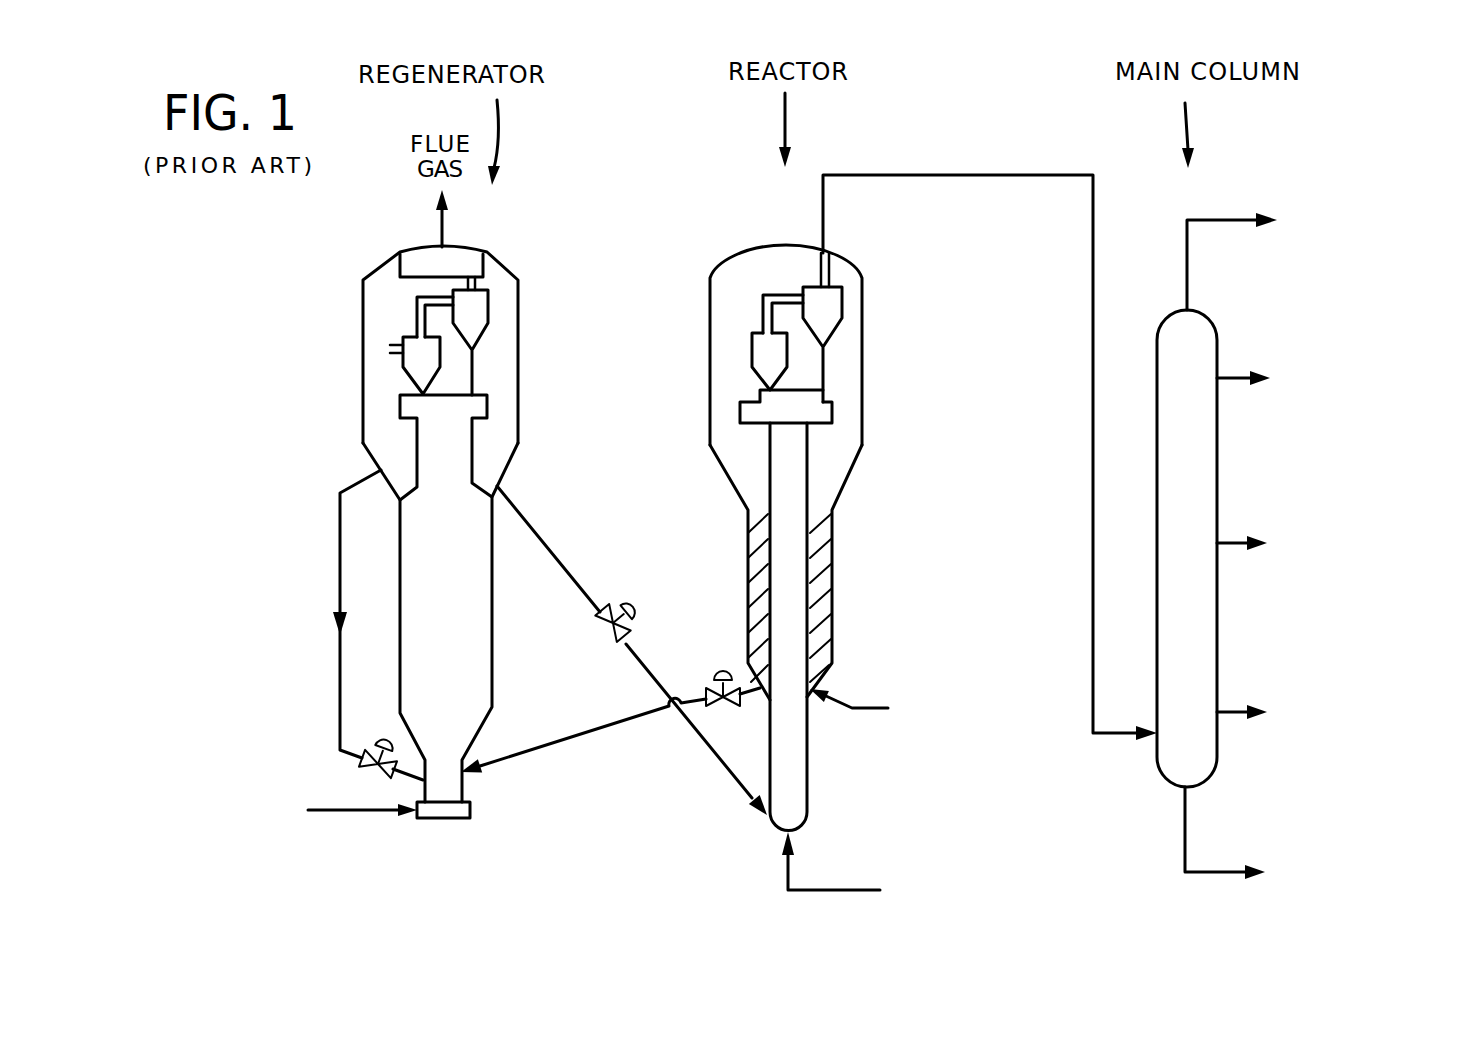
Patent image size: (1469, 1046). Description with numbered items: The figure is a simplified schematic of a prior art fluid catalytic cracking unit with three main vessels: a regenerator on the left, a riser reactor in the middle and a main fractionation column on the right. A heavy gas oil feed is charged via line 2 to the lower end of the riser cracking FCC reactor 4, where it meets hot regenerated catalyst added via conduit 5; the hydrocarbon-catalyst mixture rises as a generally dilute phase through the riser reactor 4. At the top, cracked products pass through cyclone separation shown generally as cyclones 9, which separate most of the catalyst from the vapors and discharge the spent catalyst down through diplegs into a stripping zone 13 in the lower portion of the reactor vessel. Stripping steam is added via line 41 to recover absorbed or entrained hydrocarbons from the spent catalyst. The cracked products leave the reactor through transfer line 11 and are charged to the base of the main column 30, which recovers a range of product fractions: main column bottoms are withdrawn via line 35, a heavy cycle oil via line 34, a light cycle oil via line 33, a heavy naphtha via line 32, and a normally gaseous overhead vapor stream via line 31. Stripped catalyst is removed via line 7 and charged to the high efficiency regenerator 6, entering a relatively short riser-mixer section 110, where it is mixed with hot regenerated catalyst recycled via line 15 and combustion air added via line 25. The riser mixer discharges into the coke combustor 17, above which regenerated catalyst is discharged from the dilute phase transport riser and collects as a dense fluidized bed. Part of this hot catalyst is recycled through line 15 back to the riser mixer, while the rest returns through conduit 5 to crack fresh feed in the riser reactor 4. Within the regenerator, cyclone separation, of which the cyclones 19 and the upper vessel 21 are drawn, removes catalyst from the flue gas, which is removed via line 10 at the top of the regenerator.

The line 2 is at (817, 890).
The riser cracking FCC reactor 4 is at (810, 790).
The conduit 5 is at (722, 760).
The high efficiency regenerator 6 is at (442, 532).
The line 7 is at (537, 748).
The cyclones 9 is at (750, 335).
The line 10 is at (437, 243).
The transfer line 11 is at (990, 177).
The stripping zone 13 is at (834, 582).
The line 15 is at (340, 552).
The coke combustor 17 is at (493, 643).
The regenerator cyclones 19 is at (415, 313).
The regenerator upper vessel 21 is at (518, 395).
The line 25 is at (358, 813).
The main column 30 is at (1218, 447).
The line 31 is at (1218, 220).
The line 32 is at (1225, 378).
The line 33 is at (1225, 543).
The line 34 is at (1225, 712).
The line 35 is at (1227, 877).
The line 41 is at (843, 703).
The riser-mixer section 110 is at (460, 787).